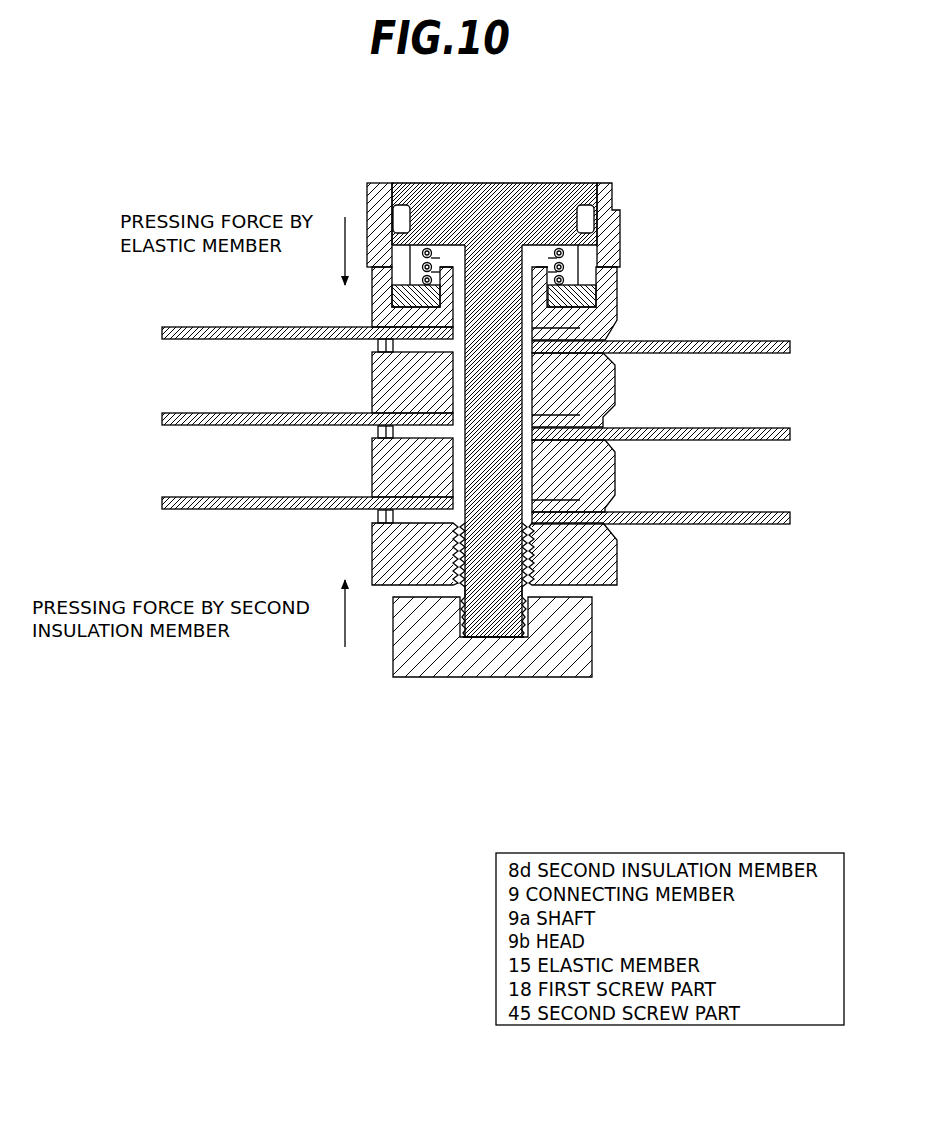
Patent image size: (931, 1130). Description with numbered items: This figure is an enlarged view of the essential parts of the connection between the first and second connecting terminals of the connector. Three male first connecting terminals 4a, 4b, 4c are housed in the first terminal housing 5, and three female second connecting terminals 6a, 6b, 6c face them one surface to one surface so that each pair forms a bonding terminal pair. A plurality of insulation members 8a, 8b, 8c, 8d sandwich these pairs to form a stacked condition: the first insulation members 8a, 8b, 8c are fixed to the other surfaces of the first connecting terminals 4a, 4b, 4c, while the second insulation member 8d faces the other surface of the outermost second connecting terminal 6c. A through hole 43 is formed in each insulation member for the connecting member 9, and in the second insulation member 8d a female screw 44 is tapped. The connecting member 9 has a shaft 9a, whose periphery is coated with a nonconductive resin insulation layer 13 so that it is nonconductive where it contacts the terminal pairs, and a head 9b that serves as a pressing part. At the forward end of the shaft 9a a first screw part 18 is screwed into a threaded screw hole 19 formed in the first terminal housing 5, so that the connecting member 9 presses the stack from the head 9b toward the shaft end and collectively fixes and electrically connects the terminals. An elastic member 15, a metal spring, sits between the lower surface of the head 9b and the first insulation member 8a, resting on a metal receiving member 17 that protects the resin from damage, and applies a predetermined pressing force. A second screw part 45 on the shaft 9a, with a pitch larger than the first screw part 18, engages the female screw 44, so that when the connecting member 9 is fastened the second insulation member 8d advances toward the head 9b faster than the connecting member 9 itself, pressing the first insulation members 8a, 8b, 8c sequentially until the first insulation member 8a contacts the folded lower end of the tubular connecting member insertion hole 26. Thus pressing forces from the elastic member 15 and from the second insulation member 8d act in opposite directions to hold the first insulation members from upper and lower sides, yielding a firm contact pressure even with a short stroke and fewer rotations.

The first connecting terminal 4a is at (164, 326).
The first connecting terminal 4b is at (163, 412).
The first connecting terminal 4c is at (163, 496).
The second connecting terminal 6a is at (787, 341).
The second connecting terminal 6b is at (787, 428).
The second connecting terminal 6c is at (787, 512).
The first insulation member 8a is at (372, 318).
The first insulation member 8b is at (372, 386).
The first insulation member 8c is at (372, 470).
The second insulation member 8d is at (372, 547).
The connecting member 9 is at (532, 429).
The shaft 9a is at (518, 372).
The head 9b is at (526, 182).
The insulation layer 13 is at (615, 395).
The elastic member 15 is at (563, 278).
The receiving member 17 is at (617, 304).
The first screw part 18 is at (527, 620).
The screw hole 19 is at (475, 638).
The connecting member insertion hole 26 is at (590, 182).
The through hole 43 is at (533, 466).
The female screw 44 is at (532, 590).
The second screw part 45 is at (530, 553).
The first terminal housing 5 is at (598, 643).